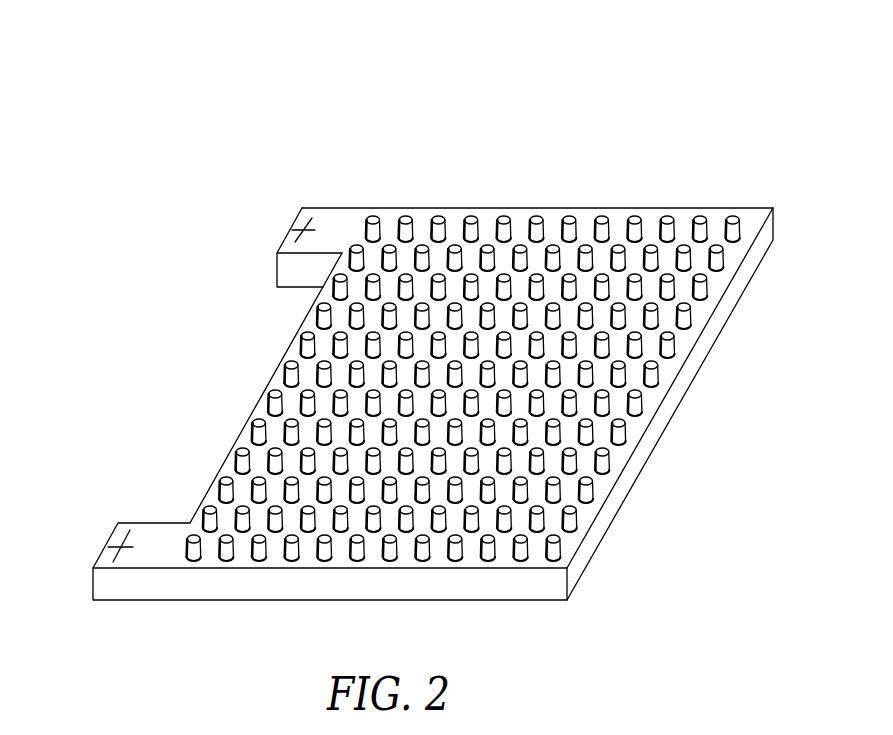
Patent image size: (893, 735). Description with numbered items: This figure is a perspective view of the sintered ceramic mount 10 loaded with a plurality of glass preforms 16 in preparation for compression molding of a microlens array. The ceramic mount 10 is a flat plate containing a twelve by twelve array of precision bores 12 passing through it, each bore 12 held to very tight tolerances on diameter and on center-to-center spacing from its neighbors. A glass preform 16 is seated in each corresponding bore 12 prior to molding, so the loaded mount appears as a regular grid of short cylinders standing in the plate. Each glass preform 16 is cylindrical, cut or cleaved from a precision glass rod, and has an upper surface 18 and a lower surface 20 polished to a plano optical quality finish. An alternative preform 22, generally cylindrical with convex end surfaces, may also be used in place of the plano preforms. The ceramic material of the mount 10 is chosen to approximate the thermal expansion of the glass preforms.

The sintered ceramic mount 10 is at (748, 270).
The precision bore 12 is at (691, 322).
The glass preform 16 is at (641, 400).
The upper surface 18 is at (471, 216).
The lower surface 20 is at (562, 82).
The alternative preform 22 is at (297, 236).